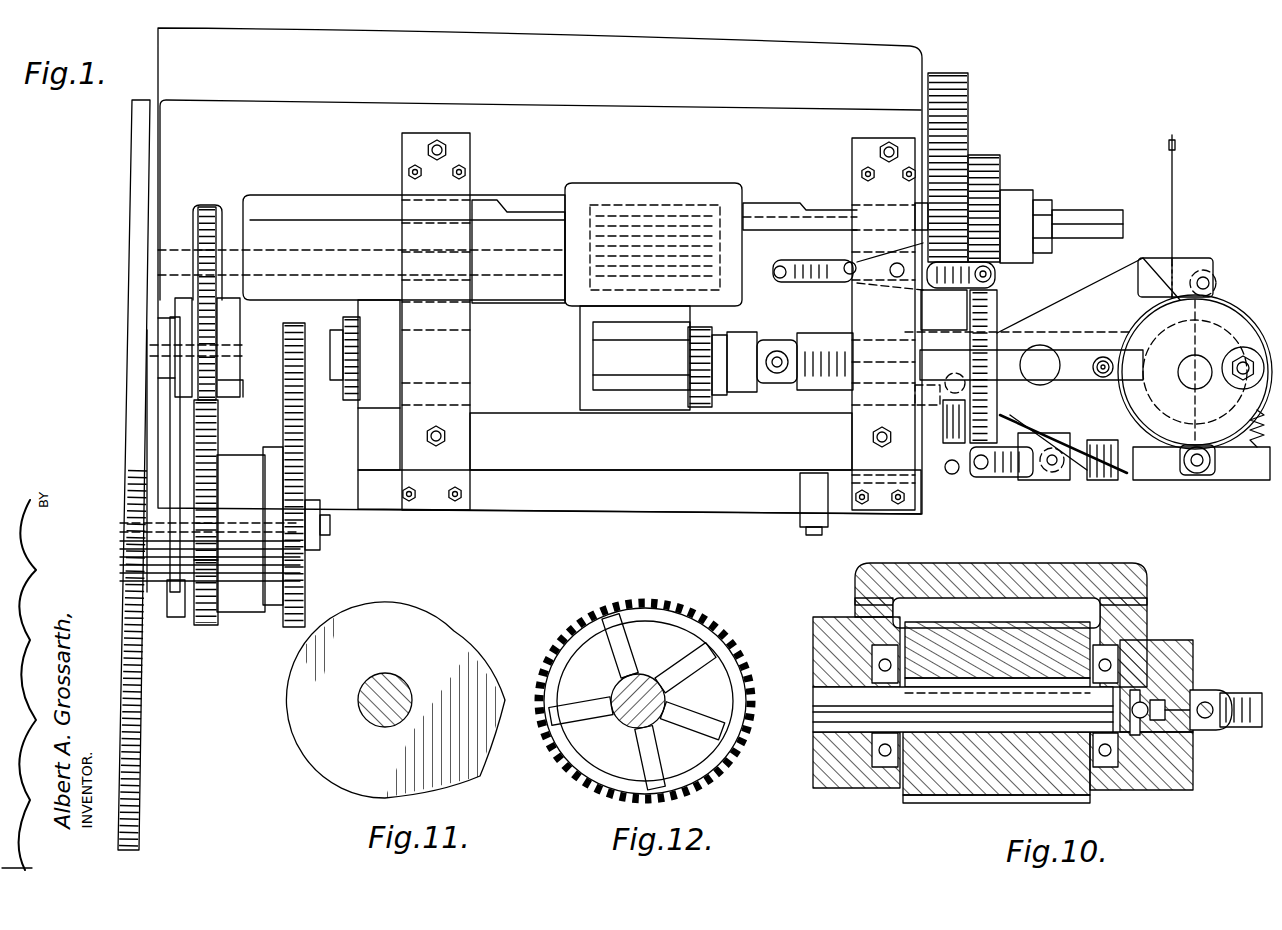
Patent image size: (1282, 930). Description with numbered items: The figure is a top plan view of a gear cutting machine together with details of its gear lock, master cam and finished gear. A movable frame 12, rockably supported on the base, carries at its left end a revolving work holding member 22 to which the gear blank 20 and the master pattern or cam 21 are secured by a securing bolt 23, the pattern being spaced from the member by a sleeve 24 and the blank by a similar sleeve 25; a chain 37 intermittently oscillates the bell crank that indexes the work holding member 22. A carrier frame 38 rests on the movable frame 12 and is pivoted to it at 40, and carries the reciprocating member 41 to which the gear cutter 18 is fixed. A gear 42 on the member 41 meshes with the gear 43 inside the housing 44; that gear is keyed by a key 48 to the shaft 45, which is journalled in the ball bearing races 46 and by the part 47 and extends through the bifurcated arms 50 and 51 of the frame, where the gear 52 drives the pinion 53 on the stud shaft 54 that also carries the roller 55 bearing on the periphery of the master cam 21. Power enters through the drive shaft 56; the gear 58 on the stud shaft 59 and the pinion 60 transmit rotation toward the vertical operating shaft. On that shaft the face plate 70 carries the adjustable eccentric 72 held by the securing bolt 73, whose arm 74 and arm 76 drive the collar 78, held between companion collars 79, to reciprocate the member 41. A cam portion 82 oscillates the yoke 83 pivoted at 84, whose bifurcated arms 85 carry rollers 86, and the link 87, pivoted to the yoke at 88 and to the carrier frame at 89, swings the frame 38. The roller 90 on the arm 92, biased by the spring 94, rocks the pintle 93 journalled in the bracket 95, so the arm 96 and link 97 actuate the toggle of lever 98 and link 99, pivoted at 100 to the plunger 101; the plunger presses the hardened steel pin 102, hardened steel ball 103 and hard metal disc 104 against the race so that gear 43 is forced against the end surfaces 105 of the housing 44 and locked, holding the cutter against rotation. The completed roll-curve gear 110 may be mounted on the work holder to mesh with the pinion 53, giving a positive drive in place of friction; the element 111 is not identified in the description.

In FIG. 1, the movable frame 12 is at (741, 513).
In FIG. 1, the reciprocating gear cutter 18 is at (350, 400).
In FIG. 1, the gear blank 20 is at (306, 455).
In FIG. 1, the master pattern or cam 21 is at (178, 413).
In FIG. 11, the master pattern or cam 21 is at (385, 610).
In FIG. 1, the work holding member 22 is at (142, 688).
In FIG. 1, the securing bolt 23 is at (331, 525).
In FIG. 1, the sleeve 24 is at (153, 592).
In FIG. 1, the sleeve 25 is at (232, 468).
In FIG. 1, the chain 37 is at (1176, 141).
In FIG. 1, the carrier frame 38 is at (598, 452).
In FIG. 1, the pivot 40 is at (447, 436).
In FIG. 1, the reciprocating member 41 is at (640, 388).
In FIG. 1, the gear 42 is at (695, 396).
In FIG. 1, the gear 43 is at (600, 315).
In FIG. 10, the gear 43 is at (1000, 780).
In FIG. 1, the housing 44 is at (642, 245).
In FIG. 10, the housing 44 is at (1000, 572).
In FIG. 1, the shaft 45 is at (332, 260).
In FIG. 10, the shaft 45 is at (960, 722).
In FIG. 10, the ball bearing races 46 is at (1112, 660).
In FIG. 1, the part 47 is at (485, 235).
In FIG. 10, the key 48 is at (943, 622).
In FIG. 1, the bifurcated arm 50 is at (240, 310).
In FIG. 1, the bifurcated arm 51 is at (165, 310).
In FIG. 1, the gear 52 is at (207, 207).
In FIG. 1, the pinion 53 is at (243, 388).
In FIG. 1, the stud shaft 54 is at (178, 332).
In FIG. 1, the roller 55 is at (180, 378).
In FIG. 1, the drive shaft 56 is at (1072, 216).
In FIG. 1, the gear 58 is at (948, 78).
In FIG. 1, the stud shaft 59 is at (1042, 205).
In FIG. 1, the pinion 60 is at (998, 162).
In FIG. 1, the face plate 70 is at (1222, 312).
In FIG. 1, the eccentric 72 is at (1225, 480).
In FIG. 1, the securing bolt 73 is at (1248, 352).
In FIG. 1, the arm 74 is at (1150, 455).
In FIG. 1, the arm 76 is at (822, 345).
In FIG. 1, the collar 78 is at (777, 398).
In FIG. 1, the companion collars 79 is at (737, 395).
In FIG. 1, the cam portion 82 is at (1128, 300).
In FIG. 1, the yoke 83 is at (1058, 312).
In FIG. 1, the pivot 84 is at (1040, 348).
In FIG. 1, the bifurcated arms 85 is at (1190, 262).
In FIG. 1, the rollers 86 is at (1210, 280).
In FIG. 1, the link 87 is at (872, 430).
In FIG. 1, the pivot 88 is at (915, 397).
In FIG. 1, the pivot 89 is at (951, 475).
In FIG. 1, the roller 90 is at (1216, 388).
In FIG. 1, the arm 92 is at (1102, 480).
In FIG. 1, the pintle 93 is at (1040, 470).
In FIG. 1, the spring 94 is at (1257, 448).
In FIG. 1, the bracket 95 is at (1056, 468).
In FIG. 1, the arm 96 is at (1000, 478).
In FIG. 1, the link 97 is at (980, 323).
In FIG. 1, the lever 98 is at (907, 256).
In FIG. 1, the link 99 is at (800, 262).
In FIG. 10, the link 99 is at (1245, 728).
In FIG. 10, the pivot 100 is at (1210, 705).
In FIG. 10, the plunger 101 is at (1170, 735).
In FIG. 10, the hardened steel pin 102 is at (1160, 700).
In FIG. 10, the hardened steel ball 103 is at (1145, 690).
In FIG. 10, the hard metal disc 104 is at (1128, 790).
In FIG. 10, the end surfaces 105 is at (840, 618).
In FIG. 1, the roll-curve gear 110 is at (200, 557).
In FIG. 12, the roll-curve gear 110 is at (648, 642).
In FIG. 1, the bolt 111 is at (829, 526).